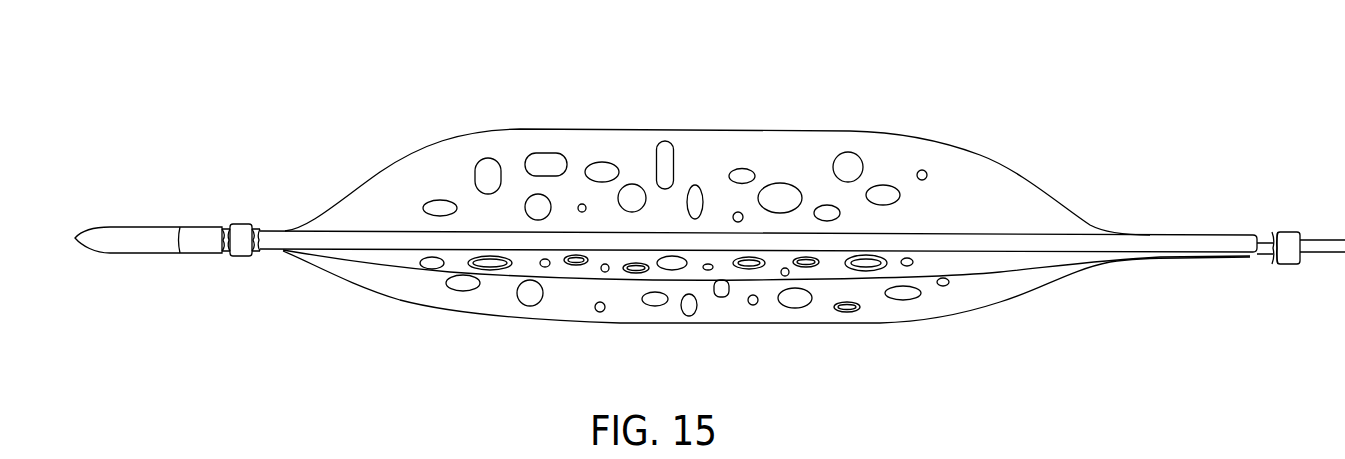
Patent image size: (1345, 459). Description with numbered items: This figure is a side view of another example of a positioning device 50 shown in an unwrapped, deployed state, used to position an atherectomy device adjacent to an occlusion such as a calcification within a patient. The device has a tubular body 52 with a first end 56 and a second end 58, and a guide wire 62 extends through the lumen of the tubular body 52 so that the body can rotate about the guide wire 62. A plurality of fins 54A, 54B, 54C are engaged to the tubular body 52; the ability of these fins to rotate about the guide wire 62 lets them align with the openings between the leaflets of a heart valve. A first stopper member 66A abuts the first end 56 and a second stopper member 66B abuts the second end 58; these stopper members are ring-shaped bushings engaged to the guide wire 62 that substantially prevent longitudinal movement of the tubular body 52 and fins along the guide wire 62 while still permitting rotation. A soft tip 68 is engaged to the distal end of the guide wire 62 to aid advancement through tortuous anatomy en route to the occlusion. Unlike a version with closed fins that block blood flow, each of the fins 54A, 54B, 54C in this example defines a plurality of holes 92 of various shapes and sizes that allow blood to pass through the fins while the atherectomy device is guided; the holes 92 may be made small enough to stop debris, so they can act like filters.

The positioning device 50 is at (890, 76).
The tubular body 52 is at (277, 238).
The fin 54A is at (942, 145).
The fin 54B is at (403, 265).
The fin 54C is at (423, 307).
The first end 56 is at (270, 250).
The second end 58 is at (1255, 260).
The guide wire 62 is at (1333, 257).
The first stopper member 66A is at (242, 254).
The second stopper member 66B is at (1272, 233).
The tip 68 is at (118, 223).
The holes 92 is at (622, 140).